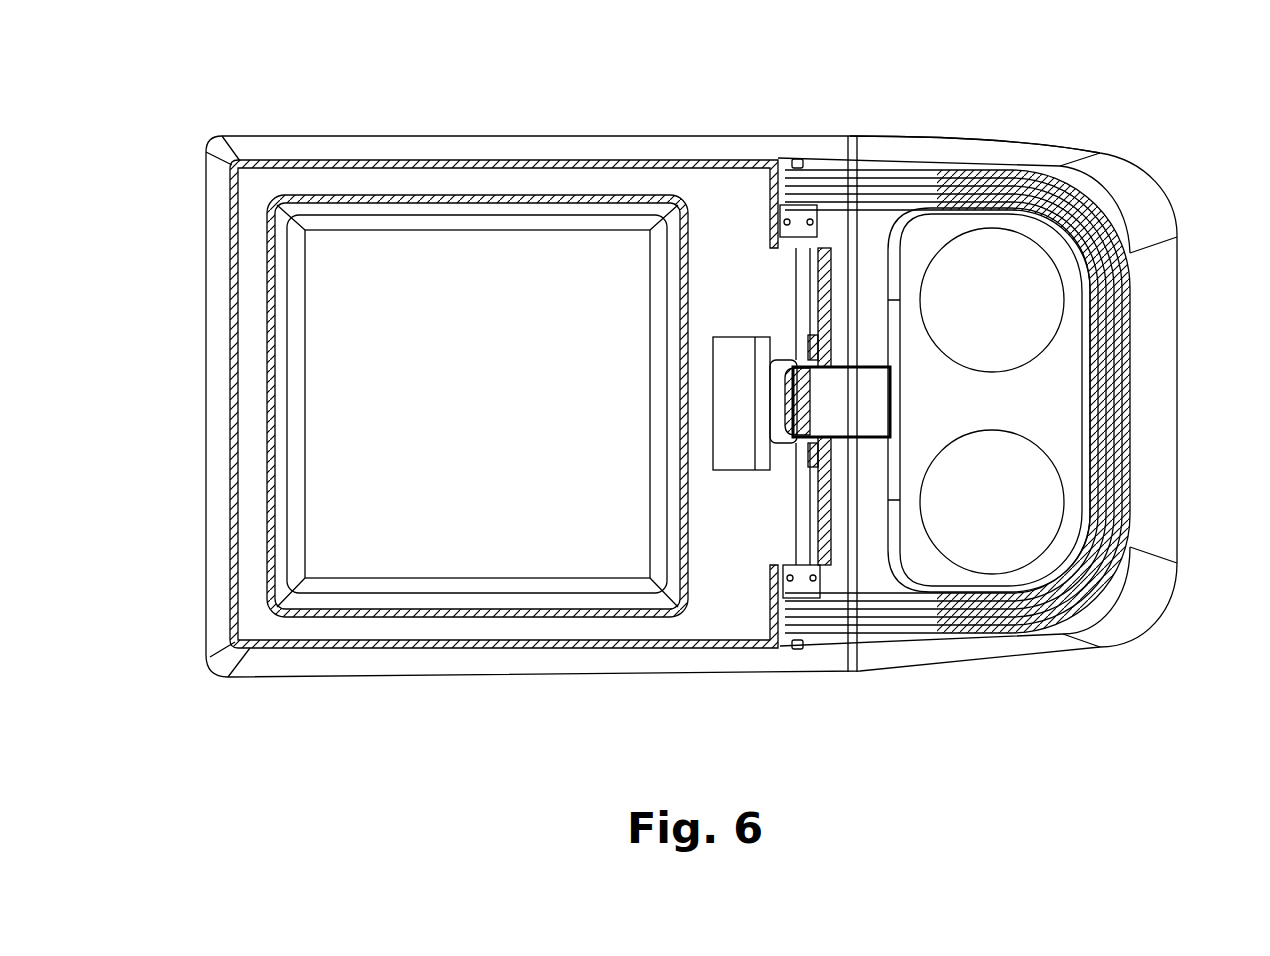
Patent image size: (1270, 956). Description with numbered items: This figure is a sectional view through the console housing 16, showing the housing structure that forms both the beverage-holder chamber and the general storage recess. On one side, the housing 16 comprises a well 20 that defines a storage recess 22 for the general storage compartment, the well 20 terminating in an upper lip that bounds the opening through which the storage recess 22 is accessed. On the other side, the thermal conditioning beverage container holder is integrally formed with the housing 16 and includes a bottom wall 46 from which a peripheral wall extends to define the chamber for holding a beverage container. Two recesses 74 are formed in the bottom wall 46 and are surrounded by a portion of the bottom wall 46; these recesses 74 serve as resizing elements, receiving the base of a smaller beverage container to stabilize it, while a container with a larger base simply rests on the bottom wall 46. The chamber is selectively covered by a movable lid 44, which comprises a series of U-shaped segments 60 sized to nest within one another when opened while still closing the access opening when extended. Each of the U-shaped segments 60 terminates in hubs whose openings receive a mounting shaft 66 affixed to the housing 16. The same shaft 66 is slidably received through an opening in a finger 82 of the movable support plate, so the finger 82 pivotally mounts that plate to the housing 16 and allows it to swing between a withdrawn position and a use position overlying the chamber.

The housing 16 is at (1178, 532).
The well 20 is at (612, 603).
The storage recess 22 is at (473, 420).
The movable lid 44 is at (1006, 166).
The bottom wall 46 is at (1045, 420).
The U-shaped segments 60 is at (890, 180).
The mounting shaft 66 is at (797, 157).
The recesses 74 is at (972, 313).
The finger 82 is at (838, 385).